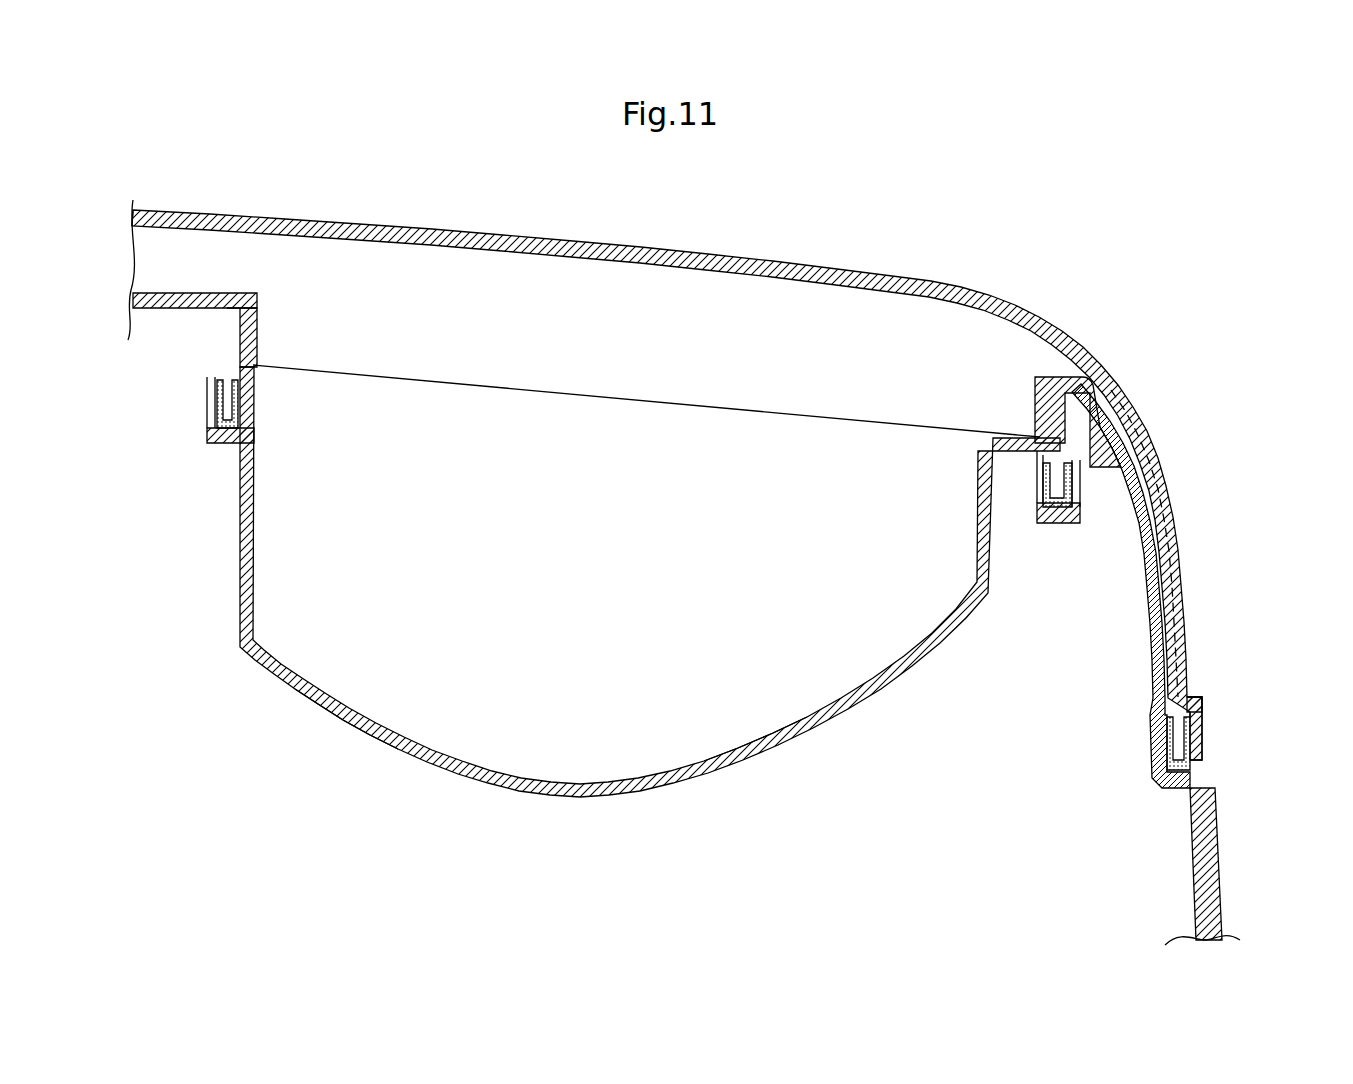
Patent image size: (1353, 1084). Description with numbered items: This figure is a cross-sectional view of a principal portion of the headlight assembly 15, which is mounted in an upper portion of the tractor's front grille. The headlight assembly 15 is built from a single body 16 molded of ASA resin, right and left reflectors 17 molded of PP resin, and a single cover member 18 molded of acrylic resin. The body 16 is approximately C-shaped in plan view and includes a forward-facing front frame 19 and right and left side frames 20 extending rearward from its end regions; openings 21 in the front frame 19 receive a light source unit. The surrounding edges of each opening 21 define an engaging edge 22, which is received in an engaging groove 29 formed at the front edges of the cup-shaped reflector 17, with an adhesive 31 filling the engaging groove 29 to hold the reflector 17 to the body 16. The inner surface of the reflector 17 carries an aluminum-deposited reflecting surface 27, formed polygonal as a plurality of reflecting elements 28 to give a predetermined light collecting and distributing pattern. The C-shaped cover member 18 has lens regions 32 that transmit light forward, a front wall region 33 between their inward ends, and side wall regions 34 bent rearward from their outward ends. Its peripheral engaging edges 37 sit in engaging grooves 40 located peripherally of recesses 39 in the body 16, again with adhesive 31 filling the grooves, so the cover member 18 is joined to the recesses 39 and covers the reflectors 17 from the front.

The headlight assembly 15 is at (1138, 278).
The body 16 is at (176, 322).
The reflector 17 is at (798, 754).
The cover member 18 is at (168, 194).
The front frame 19 is at (198, 312).
The side frame 20 is at (1192, 895).
The opening 21 is at (761, 439).
The engaging edge 22 is at (240, 402).
The reflecting surface 27 is at (364, 709).
The reflecting element 28 is at (810, 712).
The engaging groove 29 is at (222, 435).
The adhesive 31 is at (235, 418).
The lens region 32 is at (650, 245).
The front wall region 33 is at (185, 215).
The side wall region 34 is at (1177, 603).
The engaging edge 37 is at (1195, 757).
The recess 39 is at (1097, 393).
The engaging groove 40 is at (1165, 748).